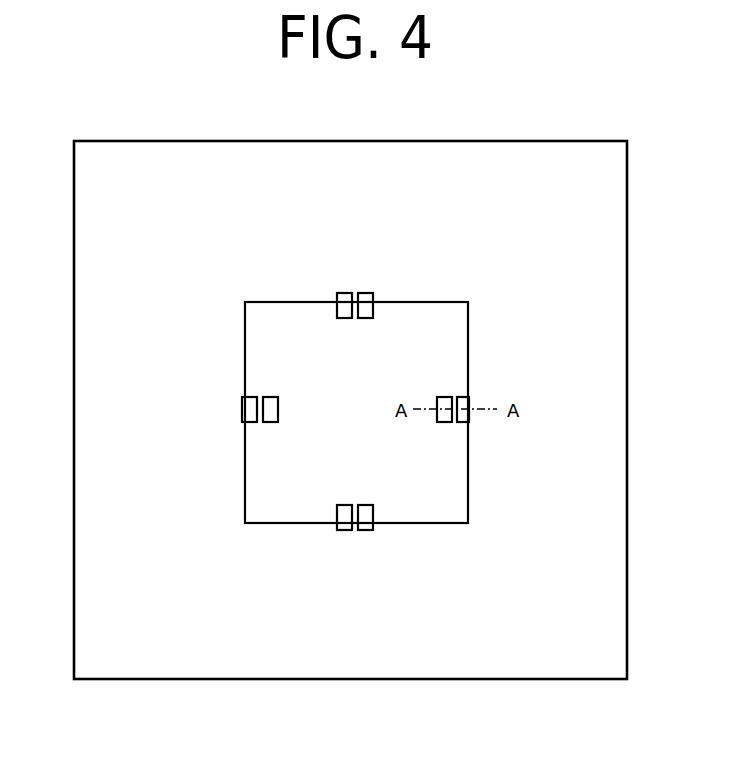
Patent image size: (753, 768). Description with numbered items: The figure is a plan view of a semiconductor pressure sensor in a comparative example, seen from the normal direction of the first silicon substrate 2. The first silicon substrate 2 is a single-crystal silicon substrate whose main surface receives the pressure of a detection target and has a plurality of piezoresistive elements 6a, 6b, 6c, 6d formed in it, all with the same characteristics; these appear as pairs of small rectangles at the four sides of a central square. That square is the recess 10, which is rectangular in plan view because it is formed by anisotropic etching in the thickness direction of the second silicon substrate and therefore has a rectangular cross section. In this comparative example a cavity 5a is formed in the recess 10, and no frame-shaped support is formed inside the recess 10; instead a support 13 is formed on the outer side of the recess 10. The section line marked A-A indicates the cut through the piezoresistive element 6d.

The first silicon substrate 2 is at (572, 588).
The cavity 5a is at (432, 357).
The support 13 is at (533, 386).
The recess 10 is at (423, 485).
The piezoresistive element 6a is at (355, 293).
The piezoresistive element 6b is at (259, 422).
The piezoresistive element 6c is at (355, 530).
The piezoresistive element 6d is at (455, 422).